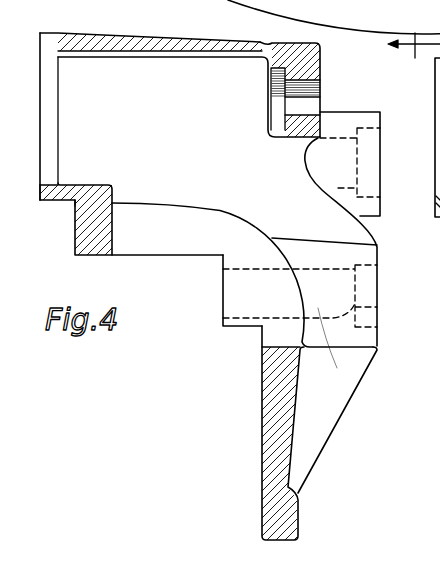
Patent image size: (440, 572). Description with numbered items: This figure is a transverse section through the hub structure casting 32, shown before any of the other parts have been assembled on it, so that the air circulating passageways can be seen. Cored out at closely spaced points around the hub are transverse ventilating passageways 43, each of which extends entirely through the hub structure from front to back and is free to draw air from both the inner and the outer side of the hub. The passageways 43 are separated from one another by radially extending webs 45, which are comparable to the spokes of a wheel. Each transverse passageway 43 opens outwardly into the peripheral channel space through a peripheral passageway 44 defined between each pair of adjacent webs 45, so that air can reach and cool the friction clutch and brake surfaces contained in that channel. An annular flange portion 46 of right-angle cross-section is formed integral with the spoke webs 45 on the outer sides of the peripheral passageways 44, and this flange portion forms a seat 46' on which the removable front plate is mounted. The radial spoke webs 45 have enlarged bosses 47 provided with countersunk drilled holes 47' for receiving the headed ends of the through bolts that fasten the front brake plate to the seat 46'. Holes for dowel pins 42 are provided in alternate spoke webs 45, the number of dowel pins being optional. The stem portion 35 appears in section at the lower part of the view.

The hub structure casting 32 is at (118, 35).
The transverse ventilating passageway 43 is at (180, 116).
The peripheral passageway 44 is at (149, 238).
The radially extending web 45 is at (439, 98).
The dowel pin 42 is at (372, 229).
The annular flange portion 46 is at (111, 228).
The seat 46' is at (45, 210).
The enlarged boss 47 is at (354, 416).
The countersunk drilled hole 47' is at (322, 316).
The stem 35 is at (272, 429).